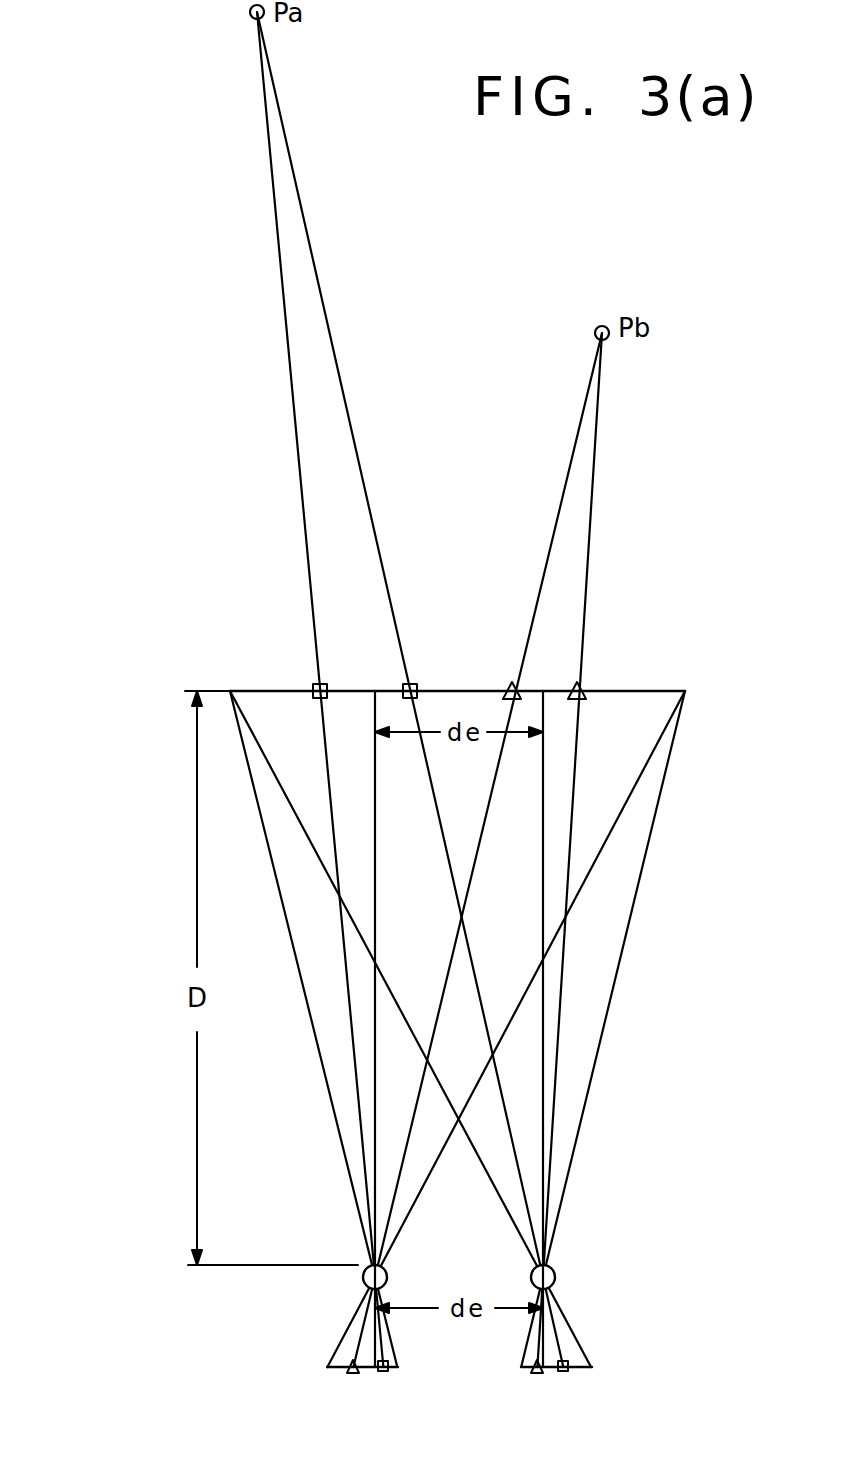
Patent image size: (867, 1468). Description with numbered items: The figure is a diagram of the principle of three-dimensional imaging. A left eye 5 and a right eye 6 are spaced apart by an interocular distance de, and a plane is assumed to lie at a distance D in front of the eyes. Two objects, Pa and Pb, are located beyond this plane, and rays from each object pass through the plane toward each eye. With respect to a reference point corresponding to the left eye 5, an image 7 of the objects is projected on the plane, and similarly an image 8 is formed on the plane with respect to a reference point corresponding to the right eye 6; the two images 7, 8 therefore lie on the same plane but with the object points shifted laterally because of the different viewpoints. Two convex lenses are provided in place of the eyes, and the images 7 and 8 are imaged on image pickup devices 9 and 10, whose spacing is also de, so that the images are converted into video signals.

The left eye 5 is at (387, 1271).
The right eye 6 is at (555, 1277).
The virtual image 7 is at (464, 664).
The virtual image 8 is at (648, 691).
The image pickup device 9 is at (392, 1367).
The image pickup device 10 is at (590, 1367).